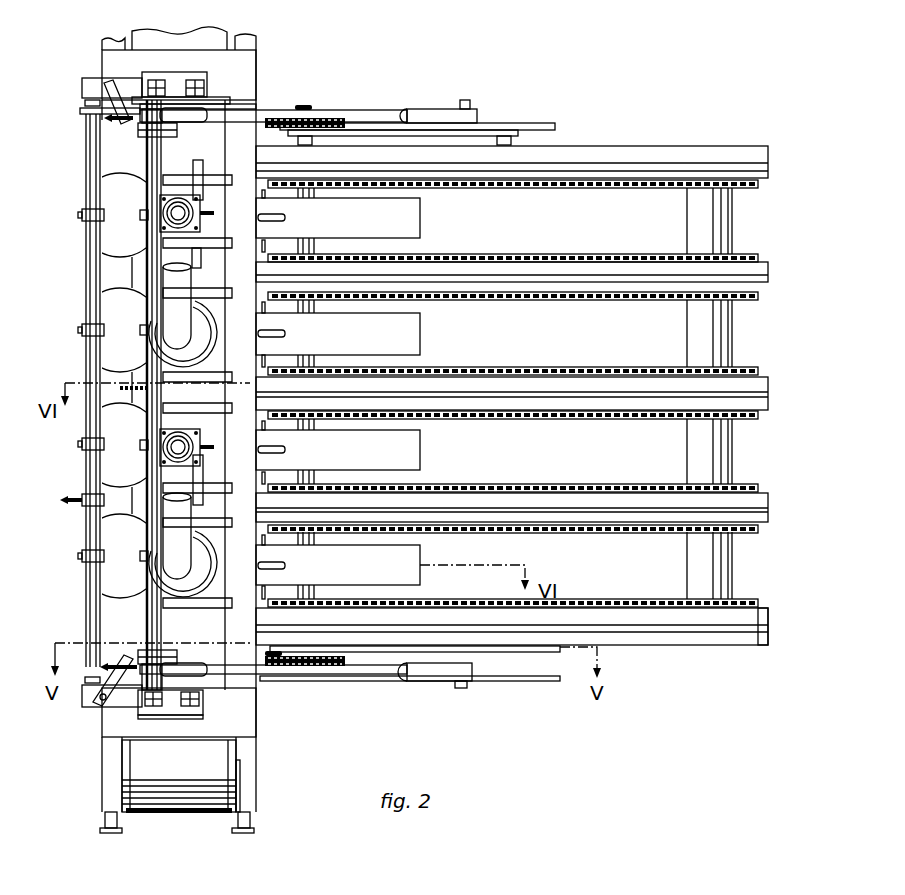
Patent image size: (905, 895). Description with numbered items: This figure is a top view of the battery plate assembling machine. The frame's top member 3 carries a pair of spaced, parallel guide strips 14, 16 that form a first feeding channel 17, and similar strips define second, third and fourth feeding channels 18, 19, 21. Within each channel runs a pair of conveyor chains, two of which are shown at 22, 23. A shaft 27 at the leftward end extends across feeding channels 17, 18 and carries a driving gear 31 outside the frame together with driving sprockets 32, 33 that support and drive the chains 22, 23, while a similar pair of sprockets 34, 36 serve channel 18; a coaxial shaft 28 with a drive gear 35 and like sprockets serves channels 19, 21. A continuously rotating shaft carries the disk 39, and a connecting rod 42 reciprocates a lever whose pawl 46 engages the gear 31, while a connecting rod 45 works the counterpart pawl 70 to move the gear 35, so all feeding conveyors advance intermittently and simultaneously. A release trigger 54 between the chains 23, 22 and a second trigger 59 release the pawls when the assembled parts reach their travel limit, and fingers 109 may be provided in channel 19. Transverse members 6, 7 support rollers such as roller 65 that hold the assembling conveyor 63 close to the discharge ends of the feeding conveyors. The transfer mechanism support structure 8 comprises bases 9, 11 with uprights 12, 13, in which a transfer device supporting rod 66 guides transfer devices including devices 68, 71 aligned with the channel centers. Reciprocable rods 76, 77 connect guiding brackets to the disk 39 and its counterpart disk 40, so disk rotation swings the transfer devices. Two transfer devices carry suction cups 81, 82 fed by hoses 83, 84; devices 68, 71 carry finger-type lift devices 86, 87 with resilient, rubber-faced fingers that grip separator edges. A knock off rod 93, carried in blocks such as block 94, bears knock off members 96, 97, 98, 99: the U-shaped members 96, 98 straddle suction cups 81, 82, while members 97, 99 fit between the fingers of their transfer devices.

The top member 3 is at (650, 590).
The transverse member 6 is at (250, 46).
The transverse member 7 is at (104, 46).
The transfer mechanism support structure 8 is at (178, 96).
The transfer mechanism base 9 is at (110, 727).
The transfer mechanism base 11 is at (116, 58).
The upright 12 is at (165, 712).
The upright 13 is at (178, 95).
The guide strip 14 is at (760, 526).
The guide strip 16 is at (760, 607).
The first feeding channel 17 is at (524, 564).
The second feeding channel 18 is at (522, 454).
The third feeding channel 19 is at (522, 333).
The fourth feeding channel 21 is at (742, 220).
The conveyor chain 22 is at (760, 528).
The conveyor chain 23 is at (735, 600).
The shaft 27 is at (300, 680).
The shaft 28 is at (302, 108).
The driving gear 31 is at (274, 668).
The driving sprocket 32 is at (285, 600).
The driving sprocket 33 is at (285, 532).
The sprocket 34 is at (283, 490).
The drive gear 35 is at (345, 122).
The sprocket 36 is at (283, 418).
The disk 39 is at (525, 656).
The disk 40 is at (535, 125).
The rod 42 is at (400, 674).
The connecting rod 45 is at (430, 130).
The pawl 46 is at (292, 668).
The release trigger 54 is at (276, 568).
The trigger 59 is at (282, 334).
The assembling conveyor 63 is at (155, 815).
The assembling conveyor roller 65 is at (226, 818).
The transfer device supporting rod 66 is at (160, 626).
The transfer device 68 is at (196, 437).
The pawl 70 is at (288, 120).
The transfer device 71 is at (200, 210).
The reciprocable rod 76 is at (283, 668).
The reciprocable rod 77 is at (262, 118).
The suction cup 81 is at (196, 598).
The suction cup 82 is at (206, 320).
The hose 83 is at (183, 545).
The hose 84 is at (183, 300).
The finger-type lift device 86 is at (200, 478).
The finger-type lift device 87 is at (198, 192).
The knock off rod 93 is at (92, 407).
The block 94 is at (84, 702).
The knock off member 96 is at (125, 590).
The knock off member 97 is at (118, 463).
The knock off member 98 is at (118, 350).
The knock off member 99 is at (118, 236).
The fingers 109 is at (278, 356).